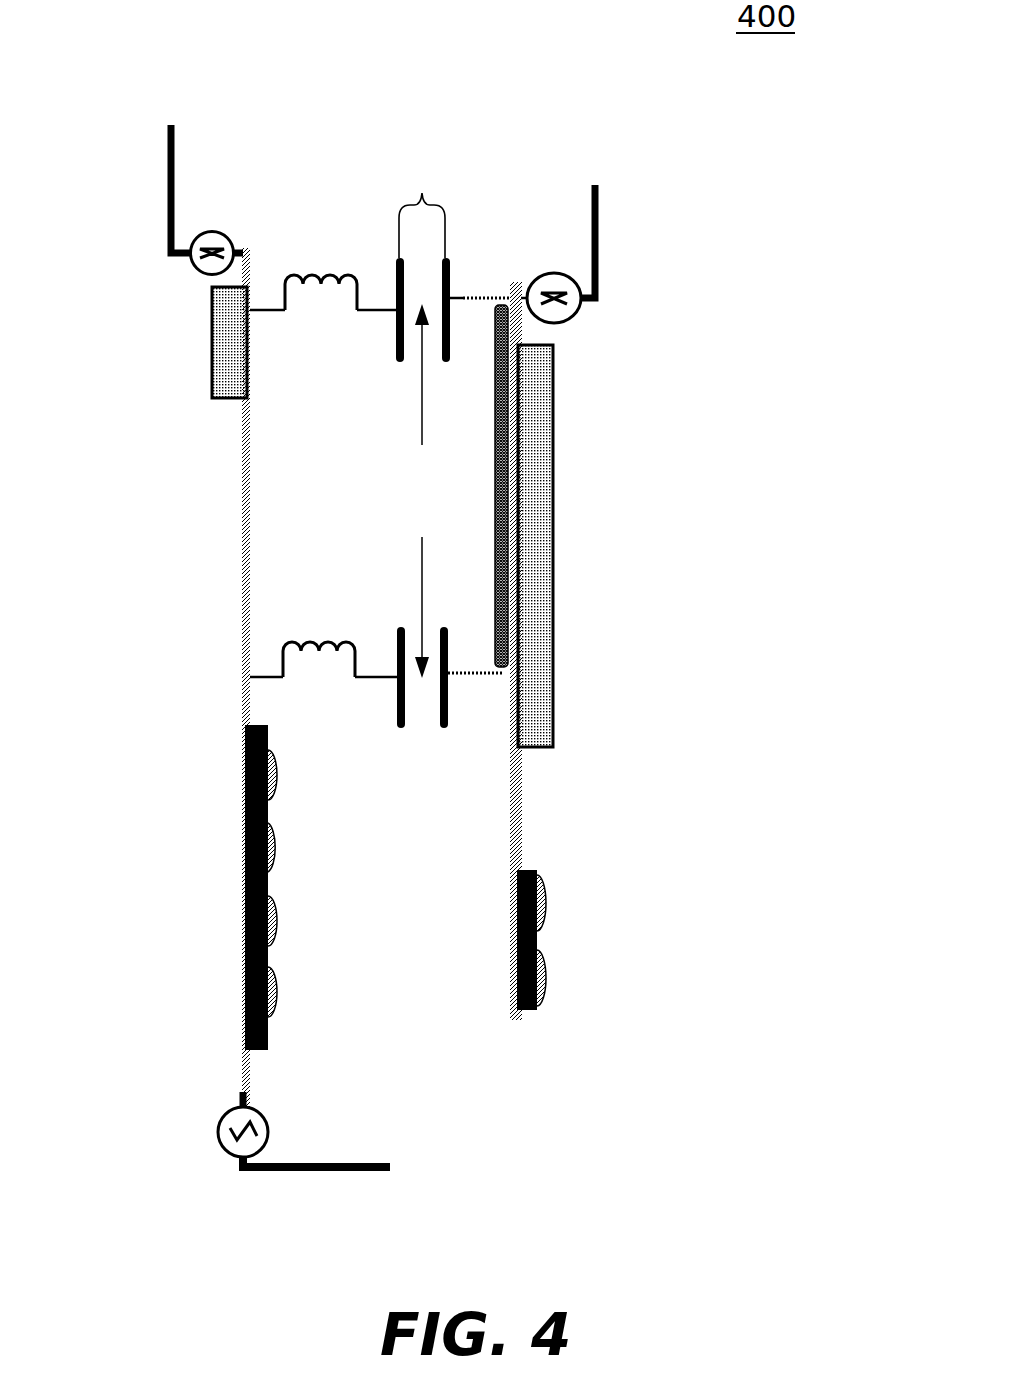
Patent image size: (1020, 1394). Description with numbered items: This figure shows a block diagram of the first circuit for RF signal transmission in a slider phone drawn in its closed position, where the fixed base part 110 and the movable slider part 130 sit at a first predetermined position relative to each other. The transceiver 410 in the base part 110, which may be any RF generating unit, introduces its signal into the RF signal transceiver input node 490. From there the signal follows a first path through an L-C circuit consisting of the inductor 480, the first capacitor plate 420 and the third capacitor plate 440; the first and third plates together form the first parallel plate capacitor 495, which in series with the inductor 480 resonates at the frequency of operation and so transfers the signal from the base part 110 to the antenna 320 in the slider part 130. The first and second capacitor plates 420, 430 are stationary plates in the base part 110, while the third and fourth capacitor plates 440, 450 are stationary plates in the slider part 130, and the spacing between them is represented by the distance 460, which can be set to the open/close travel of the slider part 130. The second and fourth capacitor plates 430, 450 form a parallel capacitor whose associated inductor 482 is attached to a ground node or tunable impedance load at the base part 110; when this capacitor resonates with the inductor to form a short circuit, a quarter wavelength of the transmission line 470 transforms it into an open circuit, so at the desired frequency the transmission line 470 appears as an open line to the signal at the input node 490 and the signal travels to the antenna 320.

The base part 110 is at (243, 593).
The slider part 130 is at (553, 675).
The antenna 320 is at (597, 237).
The transceiver 410 is at (222, 318).
The first capacitor plate 420 is at (393, 258).
The second capacitor plate 430 is at (401, 627).
The third capacitor plate 440 is at (454, 268).
The fourth capacitor plate 450 is at (443, 730).
The distance 460 is at (417, 491).
The transmission line 470 is at (513, 508).
The inductor 480 is at (289, 266).
The inductor 482 is at (342, 660).
The RF signal transceiver input node 490 is at (250, 315).
The first parallel plate capacitor 495 is at (424, 201).